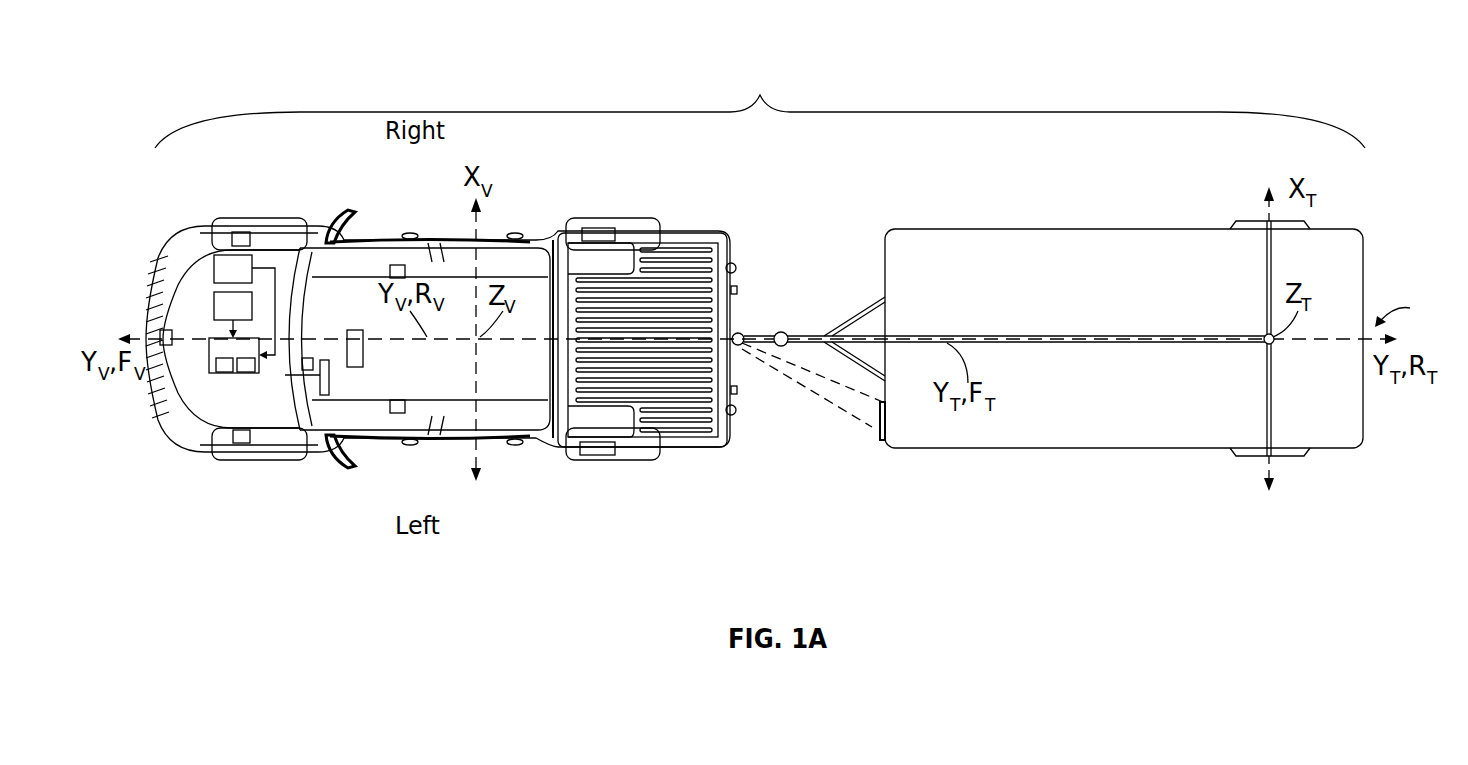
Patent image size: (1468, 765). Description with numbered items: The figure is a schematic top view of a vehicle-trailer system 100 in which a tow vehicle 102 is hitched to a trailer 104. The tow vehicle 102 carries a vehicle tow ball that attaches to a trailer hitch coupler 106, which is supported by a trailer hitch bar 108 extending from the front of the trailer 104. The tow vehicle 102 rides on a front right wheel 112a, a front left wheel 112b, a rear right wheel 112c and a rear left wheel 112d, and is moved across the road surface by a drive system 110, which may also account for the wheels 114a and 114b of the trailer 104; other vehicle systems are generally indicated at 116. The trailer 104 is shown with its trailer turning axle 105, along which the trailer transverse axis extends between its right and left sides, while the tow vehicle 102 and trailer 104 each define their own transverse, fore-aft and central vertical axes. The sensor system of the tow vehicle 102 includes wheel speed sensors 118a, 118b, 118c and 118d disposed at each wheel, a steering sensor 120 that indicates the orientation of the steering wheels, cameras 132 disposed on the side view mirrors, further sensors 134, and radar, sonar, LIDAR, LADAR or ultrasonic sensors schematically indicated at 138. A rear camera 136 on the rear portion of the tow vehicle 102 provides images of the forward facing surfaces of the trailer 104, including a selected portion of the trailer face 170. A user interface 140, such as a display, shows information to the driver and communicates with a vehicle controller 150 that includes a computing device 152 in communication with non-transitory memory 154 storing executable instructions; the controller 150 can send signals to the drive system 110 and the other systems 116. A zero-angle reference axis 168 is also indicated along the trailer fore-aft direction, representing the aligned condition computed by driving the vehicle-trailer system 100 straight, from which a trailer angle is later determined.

The vehicle-trailer system 100 is at (760, 94).
The tow vehicle 102 is at (202, 318).
The trailer 104 is at (1106, 324).
The trailer turning axle 105 is at (1265, 279).
The trailer hitch coupler 106 is at (783, 332).
The trailer hitch bar 108 is at (875, 334).
The drive system 110 is at (232, 262).
The front right wheel 112a is at (257, 220).
The front left wheel 112b is at (260, 460).
The rear right wheel 112c is at (638, 222).
The rear left wheel 112d is at (630, 458).
The trailer wheel 114a is at (1255, 222).
The trailer wheel 114b is at (1252, 458).
The other vehicle systems 116 is at (230, 300).
The wheel speed sensor 118a is at (240, 232).
The wheel speed sensor 118b is at (236, 443).
The wheel speed sensor 118c is at (600, 229).
The wheel speed sensor 118d is at (595, 455).
The steering sensor 120 is at (311, 348).
The cameras 132 is at (350, 220).
The sensors 134 is at (397, 265).
The camera 136 is at (741, 334).
The radar, sonar, LIDAR, LADAR or ultrasonic sensors 138 is at (165, 347).
The user interface 140 is at (365, 353).
The vehicle controller 150 is at (223, 350).
The computing device 152 is at (222, 374).
The non-transitory memory 154 is at (250, 374).
The zero-angle reference axis 168 is at (1414, 311).
The portion of the trailer face 170 is at (874, 419).